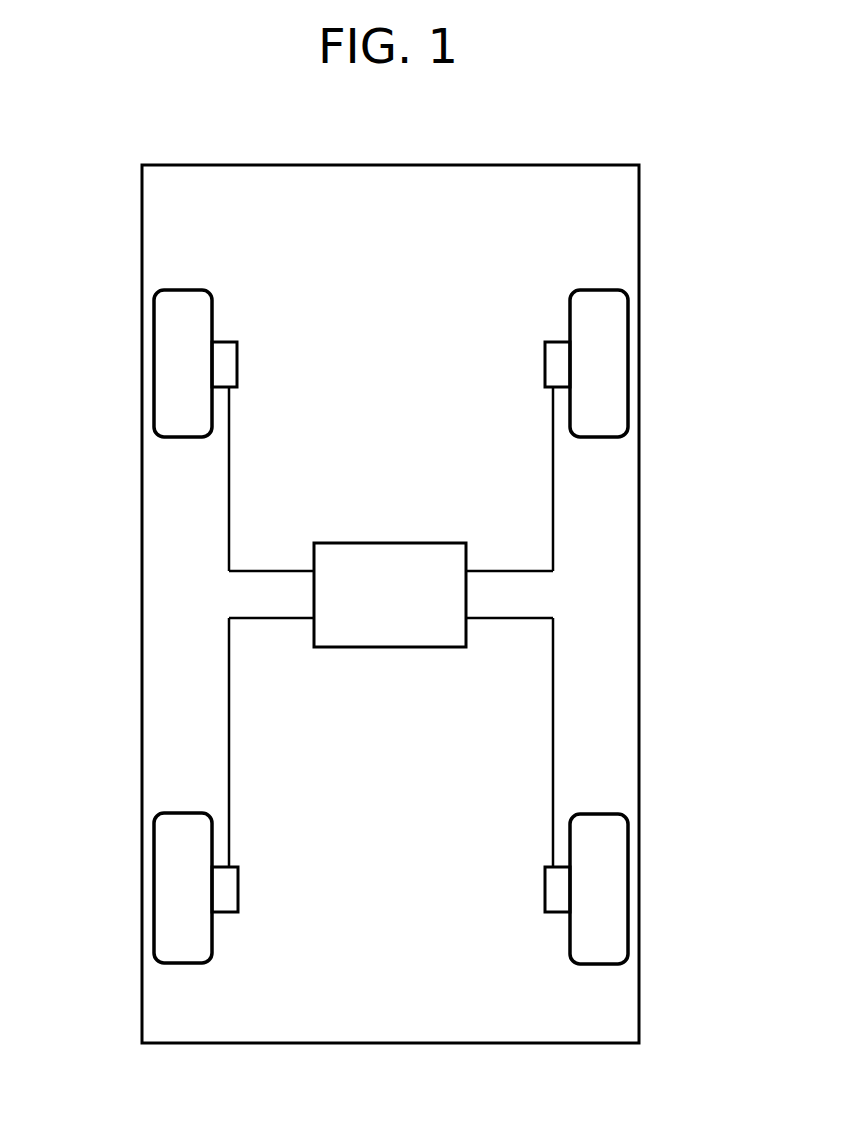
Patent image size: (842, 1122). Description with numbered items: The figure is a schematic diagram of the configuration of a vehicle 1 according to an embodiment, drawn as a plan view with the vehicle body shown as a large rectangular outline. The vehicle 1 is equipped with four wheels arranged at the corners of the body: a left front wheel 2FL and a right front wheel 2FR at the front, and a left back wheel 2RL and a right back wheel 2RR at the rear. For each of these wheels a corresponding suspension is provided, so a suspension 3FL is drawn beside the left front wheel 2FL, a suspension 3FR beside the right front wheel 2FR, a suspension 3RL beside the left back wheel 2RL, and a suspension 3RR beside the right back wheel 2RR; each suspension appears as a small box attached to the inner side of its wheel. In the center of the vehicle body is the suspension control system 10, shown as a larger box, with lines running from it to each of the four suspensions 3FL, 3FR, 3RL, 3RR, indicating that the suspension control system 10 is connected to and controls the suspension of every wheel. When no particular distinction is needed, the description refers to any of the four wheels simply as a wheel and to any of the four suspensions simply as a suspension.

The vehicle 1 is at (661, 641).
The suspension control system 10 is at (400, 647).
The left front wheel 2FL is at (154, 410).
The right front wheel 2FR is at (628, 415).
The left back wheel 2RL is at (154, 858).
The right back wheel 2RR is at (628, 855).
The suspension 3FL is at (238, 361).
The suspension 3FR is at (545, 365).
The suspension 3RL is at (238, 889).
The suspension 3RR is at (545, 891).